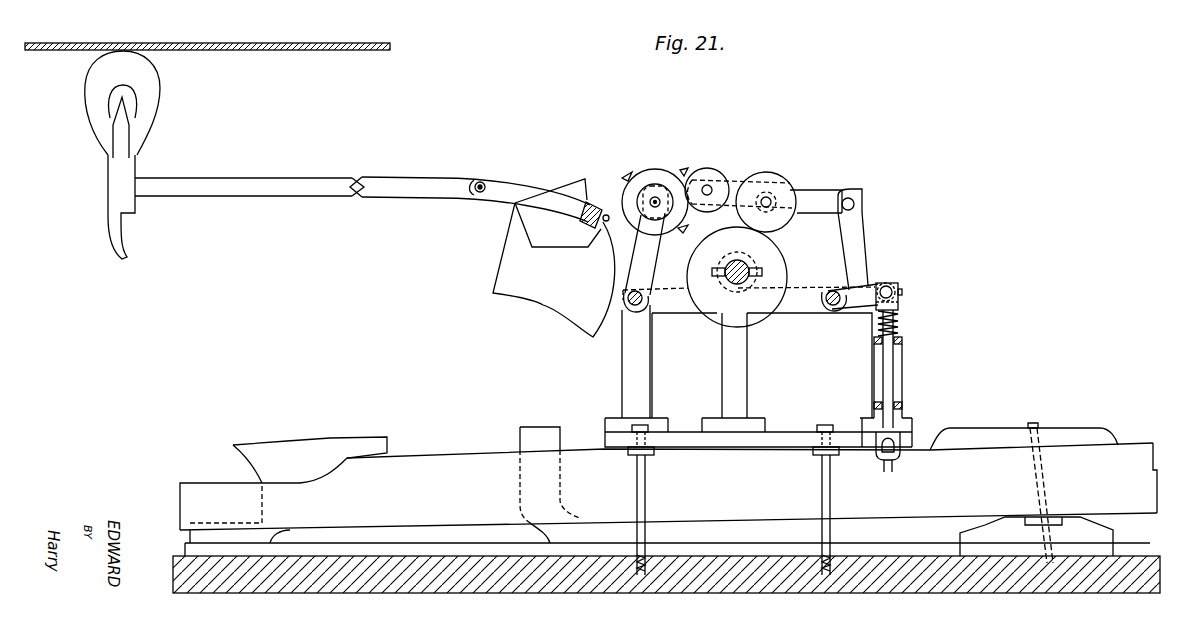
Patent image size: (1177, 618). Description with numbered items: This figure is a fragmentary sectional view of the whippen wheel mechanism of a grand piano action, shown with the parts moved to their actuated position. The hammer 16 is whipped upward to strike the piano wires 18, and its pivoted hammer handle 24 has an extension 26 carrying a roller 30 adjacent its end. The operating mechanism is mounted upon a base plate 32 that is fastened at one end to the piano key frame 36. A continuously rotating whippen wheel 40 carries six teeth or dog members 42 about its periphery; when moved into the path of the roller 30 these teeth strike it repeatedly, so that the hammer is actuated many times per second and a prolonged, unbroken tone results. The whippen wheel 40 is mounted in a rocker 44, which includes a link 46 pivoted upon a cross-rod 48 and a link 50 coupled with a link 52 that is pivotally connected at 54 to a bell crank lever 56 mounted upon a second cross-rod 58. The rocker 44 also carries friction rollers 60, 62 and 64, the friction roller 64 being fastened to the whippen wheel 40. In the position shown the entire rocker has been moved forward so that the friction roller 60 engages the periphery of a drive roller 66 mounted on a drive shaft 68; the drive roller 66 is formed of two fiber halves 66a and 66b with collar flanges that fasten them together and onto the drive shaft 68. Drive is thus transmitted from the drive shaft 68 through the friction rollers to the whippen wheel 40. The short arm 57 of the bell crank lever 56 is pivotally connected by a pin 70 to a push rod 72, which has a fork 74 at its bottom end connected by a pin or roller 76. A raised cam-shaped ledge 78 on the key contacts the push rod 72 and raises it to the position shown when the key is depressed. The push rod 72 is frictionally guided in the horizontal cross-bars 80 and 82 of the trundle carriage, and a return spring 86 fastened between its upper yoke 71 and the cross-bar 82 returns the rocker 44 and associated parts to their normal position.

The hammer 16 is at (150, 103).
The piano wires 18 is at (243, 42).
The hammer handle 24 is at (297, 178).
The extension 26 is at (518, 184).
The roller 30 is at (590, 220).
The base plate 32 is at (700, 448).
The piano key frame 36 is at (524, 597).
The whippen wheel 40 is at (653, 170).
The teeth or dog members 42 is at (621, 171).
The rocker 44 is at (818, 194).
The link 46 is at (652, 271).
The cross-rod 48 is at (635, 305).
The link 50 is at (724, 185).
The link 52 is at (804, 210).
The pivot connection 54 is at (858, 205).
The bell crank lever 56 is at (856, 246).
The short arm 57 is at (860, 306).
The second cross-rod 58 is at (832, 306).
The friction roller 60 is at (776, 175).
The friction roller 62 is at (704, 168).
The friction roller 64 is at (653, 195).
The drive roller 66 is at (717, 318).
The fiber half 66a is at (768, 306).
The fiber half 66b is at (782, 262).
The drive shaft 68 is at (742, 283).
The pin 70 is at (896, 288).
The upper yoke 71 is at (897, 303).
The push rod 72 is at (896, 369).
The fork 74 is at (895, 440).
The pin or roller 76 is at (884, 443).
The cam-shaped ledge 78 is at (880, 465).
The cross-bar 80 is at (902, 404).
The cross-bar 82 is at (902, 341).
The return spring 86 is at (898, 325).